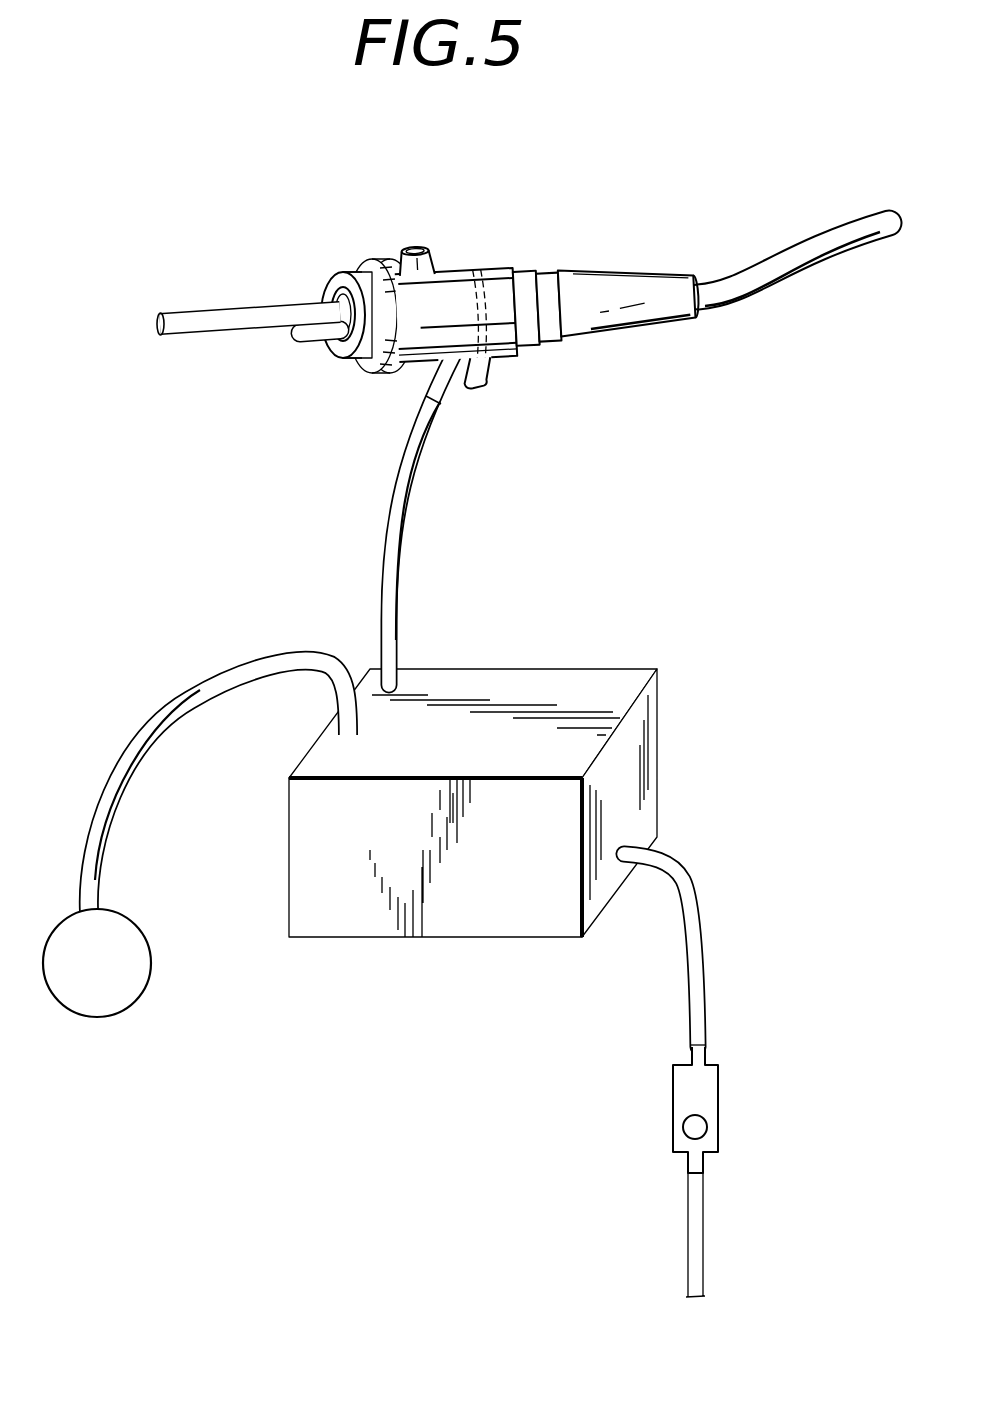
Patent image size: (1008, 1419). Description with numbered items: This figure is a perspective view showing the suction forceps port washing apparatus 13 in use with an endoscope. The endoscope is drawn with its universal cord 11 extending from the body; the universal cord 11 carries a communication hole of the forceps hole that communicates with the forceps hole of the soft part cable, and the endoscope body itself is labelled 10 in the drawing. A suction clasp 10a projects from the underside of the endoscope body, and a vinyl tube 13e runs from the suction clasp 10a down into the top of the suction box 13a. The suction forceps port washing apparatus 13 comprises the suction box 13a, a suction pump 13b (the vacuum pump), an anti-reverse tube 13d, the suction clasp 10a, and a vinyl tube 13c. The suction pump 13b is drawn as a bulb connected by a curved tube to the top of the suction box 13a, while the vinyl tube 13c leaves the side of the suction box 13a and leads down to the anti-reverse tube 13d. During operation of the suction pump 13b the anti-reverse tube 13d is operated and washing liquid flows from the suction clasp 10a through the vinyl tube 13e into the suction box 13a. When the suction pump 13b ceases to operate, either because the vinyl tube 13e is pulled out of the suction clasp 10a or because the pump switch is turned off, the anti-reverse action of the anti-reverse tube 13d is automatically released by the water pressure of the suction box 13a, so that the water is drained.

The endoscope 10 is at (430, 300).
The suction clasp 10a is at (437, 388).
The universal cord 11 is at (773, 280).
The suction forceps port washing apparatus 13 is at (446, 824).
The suction box 13a is at (503, 917).
The suction pump 13b is at (131, 1007).
The vinyl tube 13c is at (701, 943).
The anti-reverse tube 13d is at (718, 1107).
The vinyl tube 13e is at (398, 572).